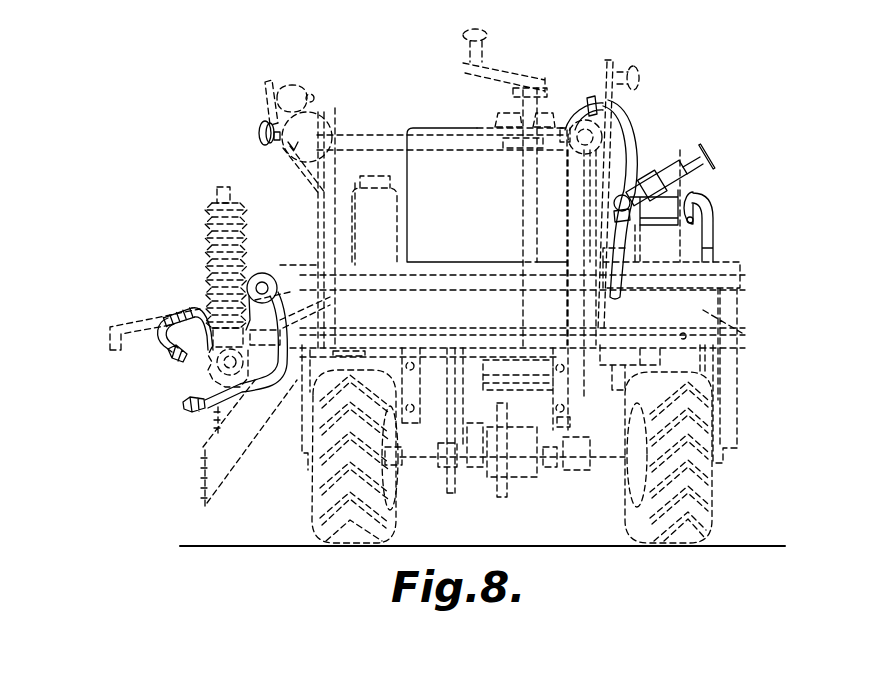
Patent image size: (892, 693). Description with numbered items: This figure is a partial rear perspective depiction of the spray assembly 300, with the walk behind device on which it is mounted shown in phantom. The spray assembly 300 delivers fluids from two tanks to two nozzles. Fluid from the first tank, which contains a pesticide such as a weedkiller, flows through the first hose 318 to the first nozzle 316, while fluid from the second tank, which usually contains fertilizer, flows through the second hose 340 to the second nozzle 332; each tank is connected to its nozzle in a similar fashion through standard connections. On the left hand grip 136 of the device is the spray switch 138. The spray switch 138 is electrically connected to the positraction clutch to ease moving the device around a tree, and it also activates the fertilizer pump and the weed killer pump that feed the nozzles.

The spray assembly 300 is at (662, 187).
The spray switch 138 is at (259, 130).
The left hand grip 136 is at (290, 148).
The second hose 340 is at (172, 320).
The second nozzle 332 is at (186, 360).
The first nozzle 316 is at (188, 410).
The first hose 318 is at (245, 378).